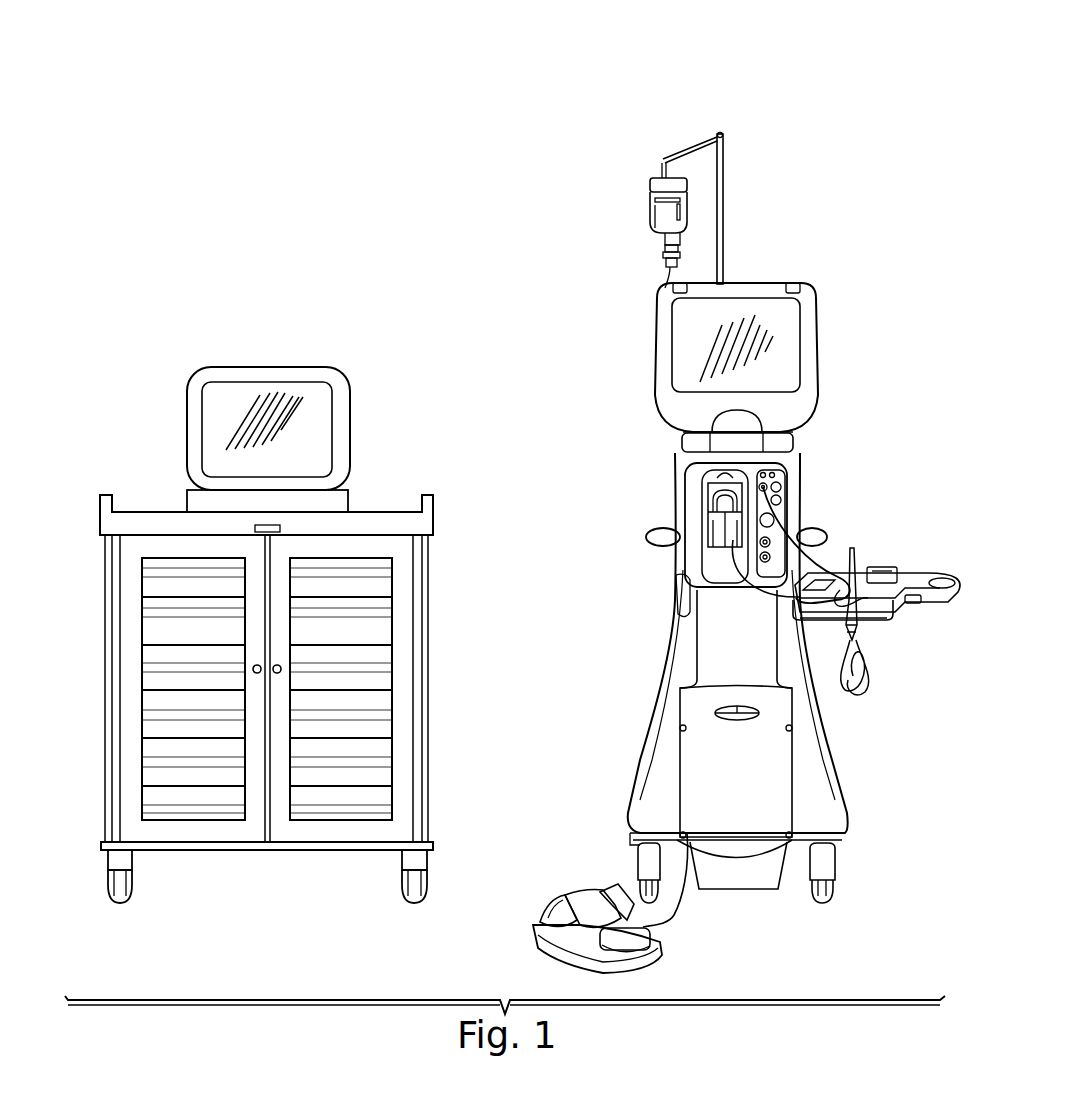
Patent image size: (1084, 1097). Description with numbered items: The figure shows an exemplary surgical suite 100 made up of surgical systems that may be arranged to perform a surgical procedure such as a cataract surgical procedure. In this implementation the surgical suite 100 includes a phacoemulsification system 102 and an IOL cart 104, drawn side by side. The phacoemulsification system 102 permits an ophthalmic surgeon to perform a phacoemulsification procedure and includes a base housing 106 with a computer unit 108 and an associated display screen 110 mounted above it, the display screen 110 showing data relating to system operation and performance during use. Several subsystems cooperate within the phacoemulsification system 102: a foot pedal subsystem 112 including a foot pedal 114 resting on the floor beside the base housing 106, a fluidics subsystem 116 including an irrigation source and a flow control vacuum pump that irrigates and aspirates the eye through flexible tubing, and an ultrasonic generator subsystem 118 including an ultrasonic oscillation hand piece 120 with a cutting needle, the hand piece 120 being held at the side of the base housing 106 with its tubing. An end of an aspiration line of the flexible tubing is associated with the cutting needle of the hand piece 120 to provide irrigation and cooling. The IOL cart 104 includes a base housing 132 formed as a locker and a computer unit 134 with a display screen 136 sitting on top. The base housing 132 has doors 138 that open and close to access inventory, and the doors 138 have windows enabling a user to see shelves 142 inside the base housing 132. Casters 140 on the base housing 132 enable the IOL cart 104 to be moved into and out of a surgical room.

The surgical suite 100 is at (294, 72).
The phacoemulsification system 102 is at (834, 234).
The IOL cart 104 is at (152, 312).
The base housing 106 is at (660, 665).
The computer unit 108 is at (682, 452).
The display screen 110 is at (654, 346).
The foot pedal subsystem 112 is at (572, 878).
The foot pedal 114 is at (546, 916).
The fluidics subsystem 116 is at (654, 514).
The ultrasonic generator subsystem 118 is at (806, 513).
The ultrasonic oscillation hand piece 120 is at (852, 548).
The base housing 132 is at (430, 680).
The computer unit 134 is at (187, 500).
The display screen 136 is at (266, 367).
The doors 138 is at (408, 600).
The casters 140 is at (133, 882).
The shelves 142 is at (156, 584).